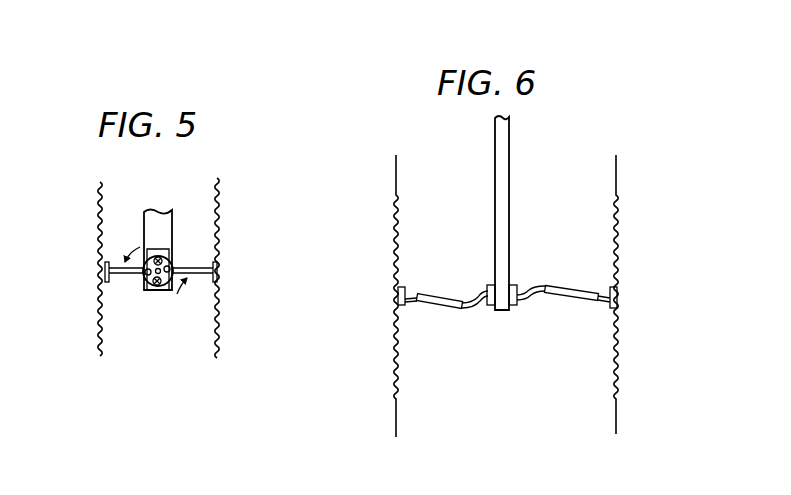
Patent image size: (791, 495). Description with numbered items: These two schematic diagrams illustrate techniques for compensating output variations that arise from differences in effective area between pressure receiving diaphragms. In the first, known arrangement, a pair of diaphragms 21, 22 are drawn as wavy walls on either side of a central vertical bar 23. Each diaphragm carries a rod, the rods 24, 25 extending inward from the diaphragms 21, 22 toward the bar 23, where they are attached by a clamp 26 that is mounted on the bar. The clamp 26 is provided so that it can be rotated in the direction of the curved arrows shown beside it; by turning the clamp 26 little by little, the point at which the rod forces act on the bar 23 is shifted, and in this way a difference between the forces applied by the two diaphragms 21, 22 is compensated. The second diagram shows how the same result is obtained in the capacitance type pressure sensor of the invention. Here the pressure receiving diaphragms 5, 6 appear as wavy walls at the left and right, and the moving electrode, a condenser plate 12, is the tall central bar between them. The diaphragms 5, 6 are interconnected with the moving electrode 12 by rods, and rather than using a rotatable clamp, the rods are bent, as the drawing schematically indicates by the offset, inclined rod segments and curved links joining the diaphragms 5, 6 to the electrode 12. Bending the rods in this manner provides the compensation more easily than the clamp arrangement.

In FIG. 5, the diaphragm 21 is at (95, 218).
In FIG. 5, the diaphragm 22 is at (220, 215).
In FIG. 5, the bar 23 is at (174, 223).
In FIG. 5, the rod 24 is at (120, 277).
In FIG. 5, the rod 25 is at (197, 277).
In FIG. 5, the clamp 26 is at (155, 293).
In FIG. 6, the pressure receiving diaphragm 5 is at (393, 200).
In FIG. 6, the pressure receiving diaphragm 6 is at (615, 197).
In FIG. 6, the condenser plate 12 is at (503, 193).